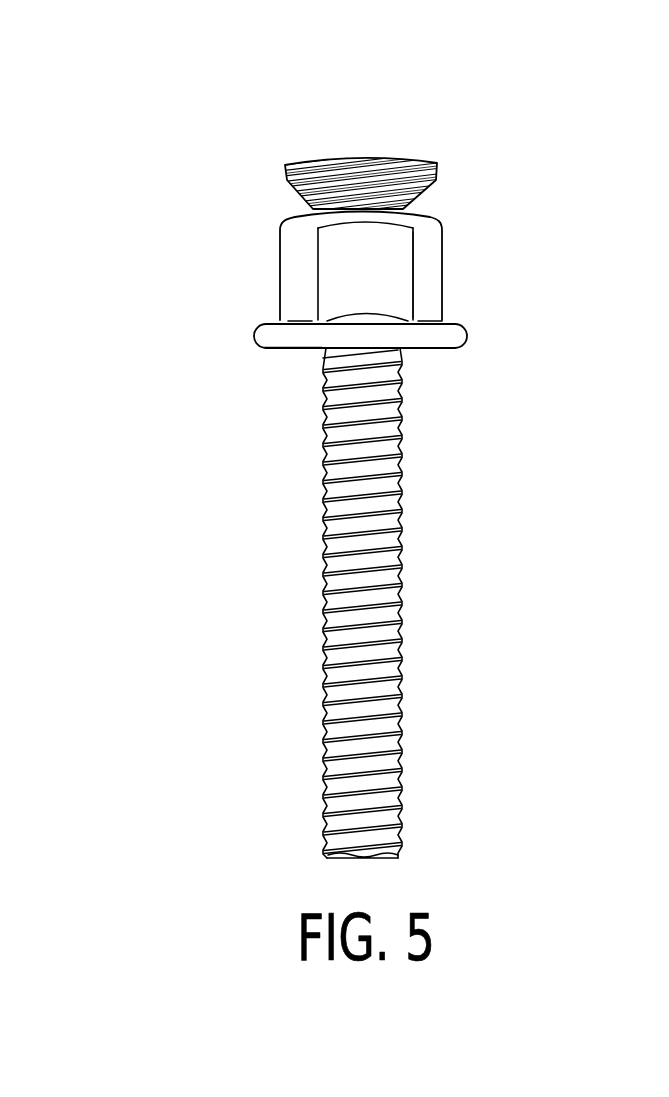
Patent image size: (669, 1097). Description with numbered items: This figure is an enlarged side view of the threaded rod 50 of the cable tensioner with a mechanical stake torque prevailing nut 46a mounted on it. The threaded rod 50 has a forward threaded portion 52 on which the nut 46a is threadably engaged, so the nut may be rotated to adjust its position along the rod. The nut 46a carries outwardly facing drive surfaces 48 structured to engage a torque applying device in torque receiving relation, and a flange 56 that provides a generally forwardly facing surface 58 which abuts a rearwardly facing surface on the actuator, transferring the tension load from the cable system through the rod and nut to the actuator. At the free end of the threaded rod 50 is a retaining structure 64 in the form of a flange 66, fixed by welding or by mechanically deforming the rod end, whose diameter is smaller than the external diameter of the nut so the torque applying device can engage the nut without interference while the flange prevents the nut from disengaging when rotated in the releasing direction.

The retaining structure 64 is at (263, 135).
The flange 66 is at (393, 177).
The drive surfaces 48 is at (302, 278).
The mechanical stake torque prevailing nut 46a is at (425, 282).
The flange 56 is at (263, 333).
The forwardly facing surface 58 is at (292, 350).
The threaded rod 50 is at (458, 482).
The forward threaded portion 52 is at (400, 640).